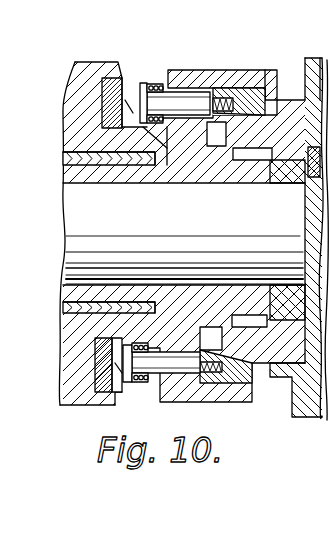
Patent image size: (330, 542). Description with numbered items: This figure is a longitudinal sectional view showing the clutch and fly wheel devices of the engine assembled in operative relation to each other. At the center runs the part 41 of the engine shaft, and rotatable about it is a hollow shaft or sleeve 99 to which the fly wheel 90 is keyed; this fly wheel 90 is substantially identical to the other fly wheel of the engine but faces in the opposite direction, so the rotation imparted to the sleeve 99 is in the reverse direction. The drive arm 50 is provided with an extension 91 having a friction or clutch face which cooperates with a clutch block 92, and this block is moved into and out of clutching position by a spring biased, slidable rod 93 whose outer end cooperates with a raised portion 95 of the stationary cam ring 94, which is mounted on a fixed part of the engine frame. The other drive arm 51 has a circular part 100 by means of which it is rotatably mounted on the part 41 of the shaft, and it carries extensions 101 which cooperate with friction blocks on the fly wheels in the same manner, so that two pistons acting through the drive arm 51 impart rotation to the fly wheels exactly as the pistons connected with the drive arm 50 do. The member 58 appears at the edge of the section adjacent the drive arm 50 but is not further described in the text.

The part of the engine shaft 41 is at (84, 211).
The drive arm 50 is at (300, 418).
The drive arm 51 is at (314, 62).
The outer member 58 is at (327, 420).
The fly wheel 90 is at (214, 72).
The extension 91 is at (257, 318).
The clutch block 92 is at (246, 108).
The spring biased, slidable rod 93 is at (172, 100).
The stationary cam ring 94 is at (110, 88).
The raised portion 95 is at (122, 80).
The hollow shaft or sleeve 99 is at (147, 185).
The circular part 100 is at (286, 290).
The extensions 101 is at (283, 112).